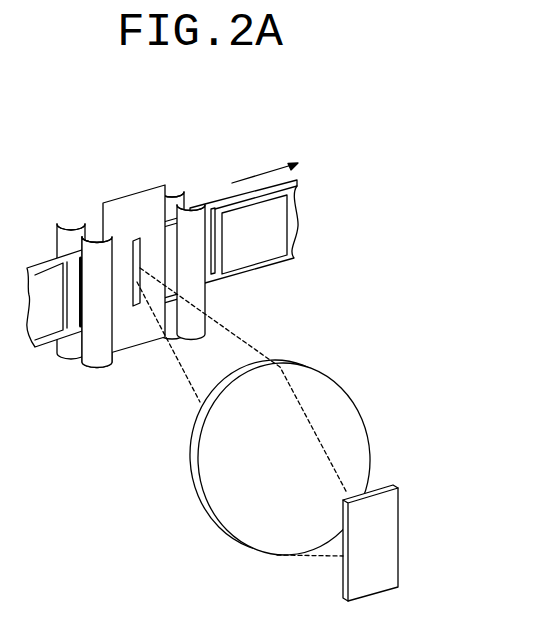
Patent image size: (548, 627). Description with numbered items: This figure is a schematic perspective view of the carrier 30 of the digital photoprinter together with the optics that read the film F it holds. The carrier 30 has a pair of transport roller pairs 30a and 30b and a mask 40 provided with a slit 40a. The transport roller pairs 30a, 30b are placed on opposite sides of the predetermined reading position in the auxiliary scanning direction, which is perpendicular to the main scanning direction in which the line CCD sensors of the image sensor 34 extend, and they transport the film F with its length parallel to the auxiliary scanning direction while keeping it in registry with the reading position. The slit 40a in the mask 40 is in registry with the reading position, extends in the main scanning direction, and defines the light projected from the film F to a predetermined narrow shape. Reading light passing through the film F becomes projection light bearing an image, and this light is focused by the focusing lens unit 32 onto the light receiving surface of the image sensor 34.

The carrier 30 is at (180, 288).
The transport roller pair 30a is at (93, 357).
The transport roller pair 30b is at (190, 272).
The mask 40 is at (151, 268).
The slit 40a is at (138, 238).
The focusing lens unit 32 is at (323, 400).
The image sensor 34 is at (382, 535).